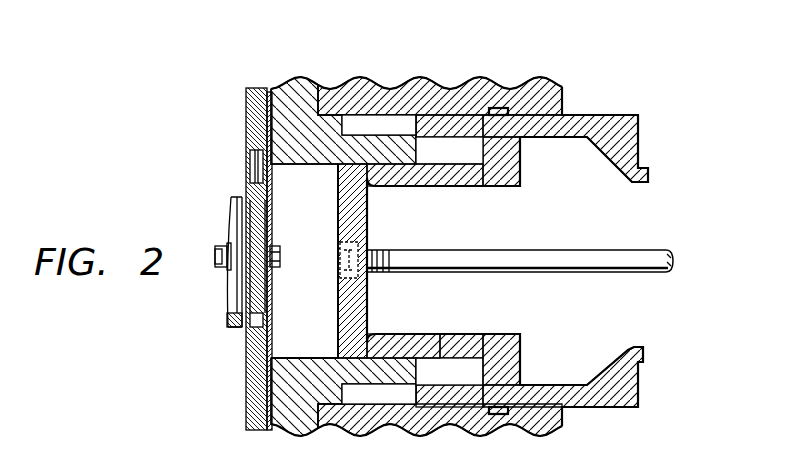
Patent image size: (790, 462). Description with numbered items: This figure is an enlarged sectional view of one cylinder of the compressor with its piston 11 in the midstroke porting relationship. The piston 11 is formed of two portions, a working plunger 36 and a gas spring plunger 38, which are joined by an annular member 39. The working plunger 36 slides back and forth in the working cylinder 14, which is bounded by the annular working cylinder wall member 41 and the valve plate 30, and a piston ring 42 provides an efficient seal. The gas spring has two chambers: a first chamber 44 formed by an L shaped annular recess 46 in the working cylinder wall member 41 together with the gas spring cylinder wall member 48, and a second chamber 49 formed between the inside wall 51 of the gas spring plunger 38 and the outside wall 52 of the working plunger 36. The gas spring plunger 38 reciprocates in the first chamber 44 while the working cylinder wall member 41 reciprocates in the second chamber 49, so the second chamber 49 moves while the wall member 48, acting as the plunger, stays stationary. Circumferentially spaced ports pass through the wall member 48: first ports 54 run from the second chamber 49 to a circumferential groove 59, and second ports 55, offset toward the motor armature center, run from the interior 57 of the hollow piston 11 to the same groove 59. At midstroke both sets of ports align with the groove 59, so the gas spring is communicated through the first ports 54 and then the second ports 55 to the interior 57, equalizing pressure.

The piston 11 is at (460, 335).
The working cylinder 14 is at (318, 275).
The valve plate 30 is at (233, 343).
The working plunger 36 is at (336, 231).
The gas spring plunger 38 is at (472, 141).
The annular member 39 is at (507, 334).
The working cylinder wall member 41 is at (408, 334).
The piston ring 42 is at (342, 354).
The first chamber 44 is at (410, 77).
The L shaped annular recess 46 is at (387, 77).
The gas spring cylinder wall member 48 is at (361, 77).
The second chamber 49 is at (496, 186).
The inside wall 51 is at (438, 143).
The outside wall 52 is at (412, 185).
The first ports 54 is at (494, 124).
The second ports 55 is at (513, 388).
The interior 57 is at (600, 229).
The circumferential groove 59 is at (502, 106).